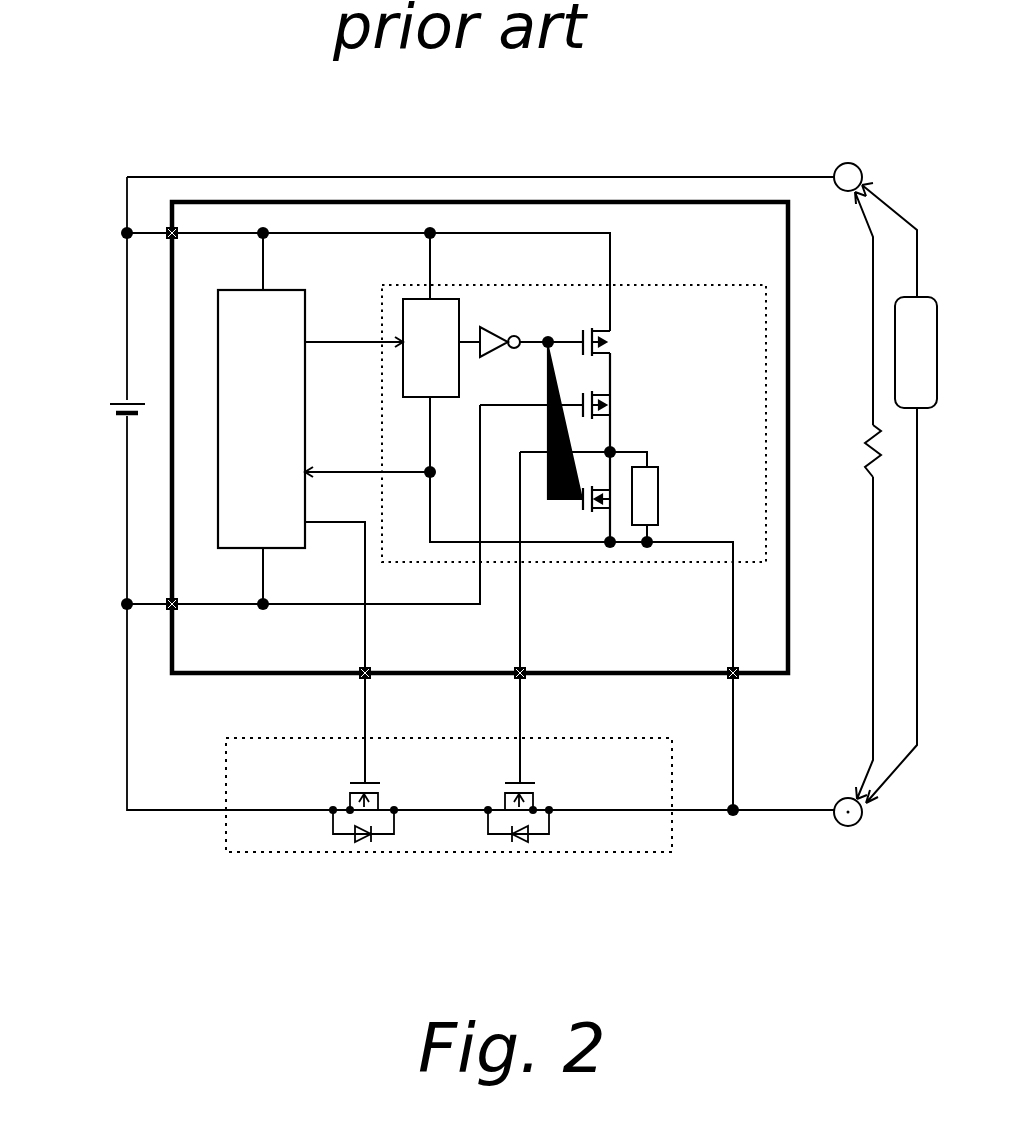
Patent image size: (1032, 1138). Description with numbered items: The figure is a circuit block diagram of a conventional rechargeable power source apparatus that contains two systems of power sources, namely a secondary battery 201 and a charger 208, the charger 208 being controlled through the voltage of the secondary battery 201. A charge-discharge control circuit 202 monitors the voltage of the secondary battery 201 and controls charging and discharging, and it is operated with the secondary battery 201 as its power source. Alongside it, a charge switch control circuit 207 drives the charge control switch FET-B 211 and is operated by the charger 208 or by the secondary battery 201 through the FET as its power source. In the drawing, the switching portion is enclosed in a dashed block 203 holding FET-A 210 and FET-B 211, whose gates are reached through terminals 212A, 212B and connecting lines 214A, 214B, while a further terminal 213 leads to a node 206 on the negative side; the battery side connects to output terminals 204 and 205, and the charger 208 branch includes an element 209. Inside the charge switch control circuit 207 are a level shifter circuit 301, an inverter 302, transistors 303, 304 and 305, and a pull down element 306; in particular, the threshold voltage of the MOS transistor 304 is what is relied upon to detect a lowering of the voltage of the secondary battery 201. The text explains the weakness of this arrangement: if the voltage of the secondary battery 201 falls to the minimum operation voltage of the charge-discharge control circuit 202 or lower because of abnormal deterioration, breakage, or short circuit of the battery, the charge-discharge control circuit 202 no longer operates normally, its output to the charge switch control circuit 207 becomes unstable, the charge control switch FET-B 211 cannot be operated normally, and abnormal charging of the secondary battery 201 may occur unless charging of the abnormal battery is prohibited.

The secondary battery 201 is at (105, 403).
The charge-discharge control circuit 202 is at (218, 348).
The switching circuit 203 is at (223, 833).
The positive output terminal +VO 204 is at (843, 157).
The negative output terminal -VO 205 is at (842, 827).
The connection node 206 is at (737, 768).
The charge switch control circuit 207 is at (615, 282).
The charger 208 is at (887, 333).
The load resistor 209 is at (847, 447).
The FET-A switching transistor 210 is at (342, 797).
The charge control switch FET-B 211 is at (550, 797).
The output terminal 212A is at (373, 657).
The output terminal 212B is at (526, 662).
The terminal 213 is at (730, 667).
The gate signal line 214A is at (370, 710).
The gate signal line 214B is at (525, 710).
The level shifter circuit 301 is at (440, 318).
The inverter 302 is at (492, 322).
The transistor 303 is at (613, 348).
The MOS transistor 304 is at (613, 412).
The transistor 305 is at (597, 517).
The pull down element 306 is at (695, 507).